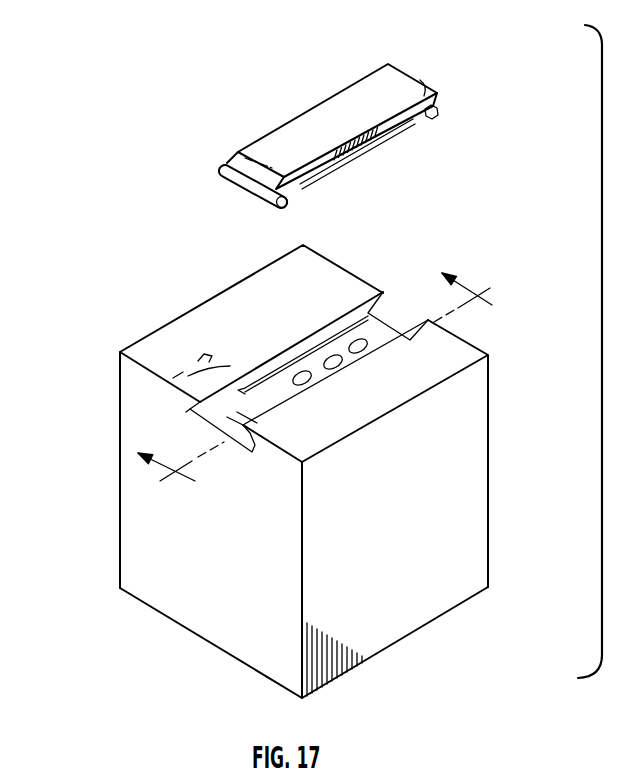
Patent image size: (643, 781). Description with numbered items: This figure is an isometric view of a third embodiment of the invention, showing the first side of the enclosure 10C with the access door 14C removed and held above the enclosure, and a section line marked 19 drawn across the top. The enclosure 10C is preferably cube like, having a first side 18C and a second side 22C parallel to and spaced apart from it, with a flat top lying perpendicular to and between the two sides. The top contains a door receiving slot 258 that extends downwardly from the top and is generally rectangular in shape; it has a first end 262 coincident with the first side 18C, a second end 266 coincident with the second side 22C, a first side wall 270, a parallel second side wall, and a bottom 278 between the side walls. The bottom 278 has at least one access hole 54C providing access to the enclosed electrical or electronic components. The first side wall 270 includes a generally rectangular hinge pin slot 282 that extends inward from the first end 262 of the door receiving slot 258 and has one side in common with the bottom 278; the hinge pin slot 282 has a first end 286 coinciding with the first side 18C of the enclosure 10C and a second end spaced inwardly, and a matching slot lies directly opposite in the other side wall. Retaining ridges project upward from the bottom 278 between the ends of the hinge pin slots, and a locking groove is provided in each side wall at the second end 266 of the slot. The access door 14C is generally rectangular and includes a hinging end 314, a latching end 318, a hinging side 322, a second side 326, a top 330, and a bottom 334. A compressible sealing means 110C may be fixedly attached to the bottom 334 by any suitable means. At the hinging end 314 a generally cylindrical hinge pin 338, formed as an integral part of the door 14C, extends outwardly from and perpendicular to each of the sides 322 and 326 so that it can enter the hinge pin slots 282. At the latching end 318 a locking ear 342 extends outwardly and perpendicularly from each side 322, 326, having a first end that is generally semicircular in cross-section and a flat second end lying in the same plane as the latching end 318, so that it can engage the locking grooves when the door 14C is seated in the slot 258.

The enclosure 10C is at (116, 527).
The access door 14C is at (300, 113).
The first side 18C is at (188, 600).
The second side 22C is at (488, 431).
The access hole 54C is at (410, 340).
The compressible sealing means 110C is at (390, 137).
The door receiving slot 258 is at (286, 345).
The first end 262 is at (253, 452).
The second end 266 is at (385, 292).
The first side wall 270 is at (267, 363).
The bottom 278 is at (280, 400).
The hinge pin slot 282 is at (193, 365).
The first end 286 is at (187, 410).
The hinging end 314 is at (241, 193).
The latching end 318 is at (412, 82).
The hinging side 322 is at (348, 87).
The second side 326 is at (418, 87).
The top 330 is at (283, 142).
The bottom 334 is at (300, 182).
The hinge pin 338 is at (225, 167).
The locking ear 342 is at (440, 117).
The section line for FIG. 19 is at (317, 385).